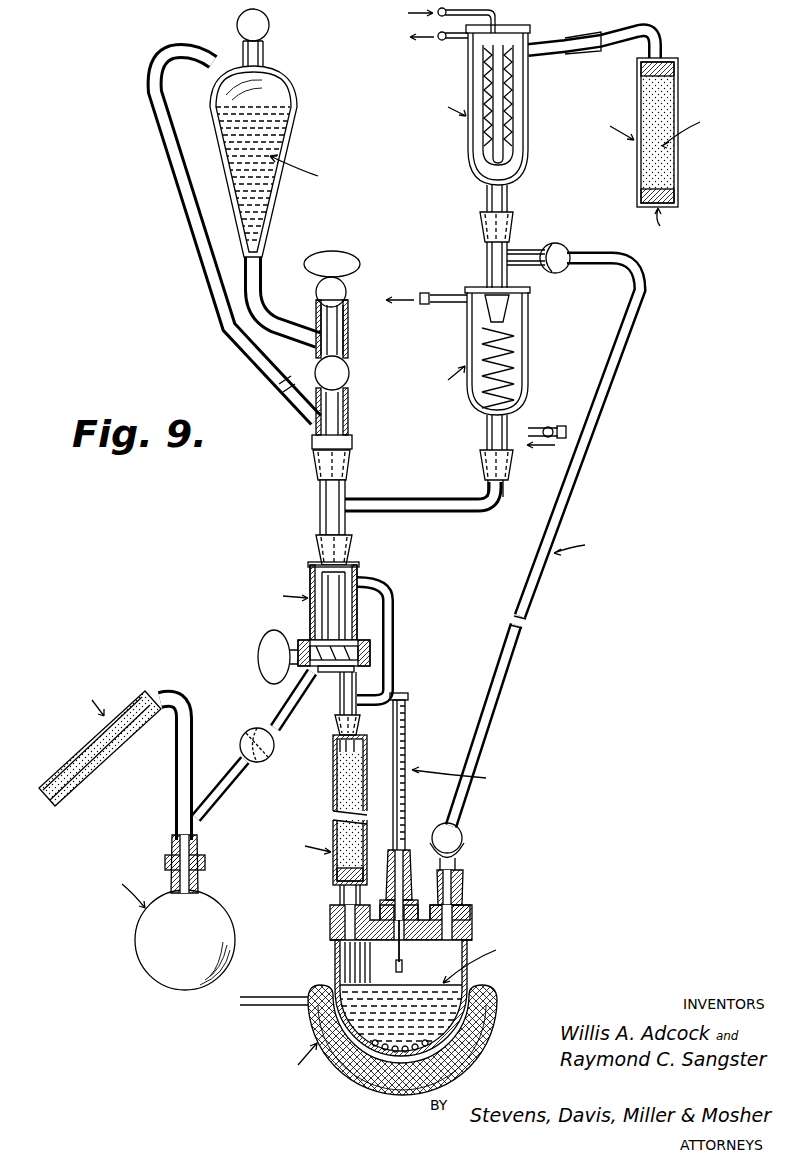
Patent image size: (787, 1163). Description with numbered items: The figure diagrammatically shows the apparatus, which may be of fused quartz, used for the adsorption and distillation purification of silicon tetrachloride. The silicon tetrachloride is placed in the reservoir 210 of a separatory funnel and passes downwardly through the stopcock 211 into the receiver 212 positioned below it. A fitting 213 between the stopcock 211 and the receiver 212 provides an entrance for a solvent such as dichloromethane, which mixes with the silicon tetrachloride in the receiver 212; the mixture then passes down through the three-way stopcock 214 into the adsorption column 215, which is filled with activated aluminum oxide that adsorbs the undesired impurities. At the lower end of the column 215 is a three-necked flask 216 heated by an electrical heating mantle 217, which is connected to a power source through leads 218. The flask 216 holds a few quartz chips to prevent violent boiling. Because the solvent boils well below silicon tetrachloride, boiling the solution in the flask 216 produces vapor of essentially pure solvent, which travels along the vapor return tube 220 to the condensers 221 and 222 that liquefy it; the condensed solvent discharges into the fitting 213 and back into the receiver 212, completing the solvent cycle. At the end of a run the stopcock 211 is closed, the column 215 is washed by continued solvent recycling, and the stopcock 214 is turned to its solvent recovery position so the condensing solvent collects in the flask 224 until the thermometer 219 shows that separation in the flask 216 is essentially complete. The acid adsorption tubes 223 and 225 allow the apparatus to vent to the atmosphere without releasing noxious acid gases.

The reservoir 210 is at (297, 86).
The stopcock 211 is at (350, 345).
The receiver 212 is at (316, 564).
The fitting 213 is at (320, 507).
The three-way stopcock 214 is at (258, 654).
The adsorption column 215 is at (333, 764).
The three-necked flask 216 is at (470, 930).
The electrical heating mantle 217 is at (497, 1002).
The leads 218 is at (283, 997).
The thermometer 219 is at (408, 716).
The vapor return tube 220 is at (503, 690).
The condenser 221 is at (468, 143).
The condenser 222 is at (528, 342).
The acid adsorption tube 223 is at (678, 80).
The flask 224 is at (140, 955).
The acid adsorption tube 225 is at (90, 762).